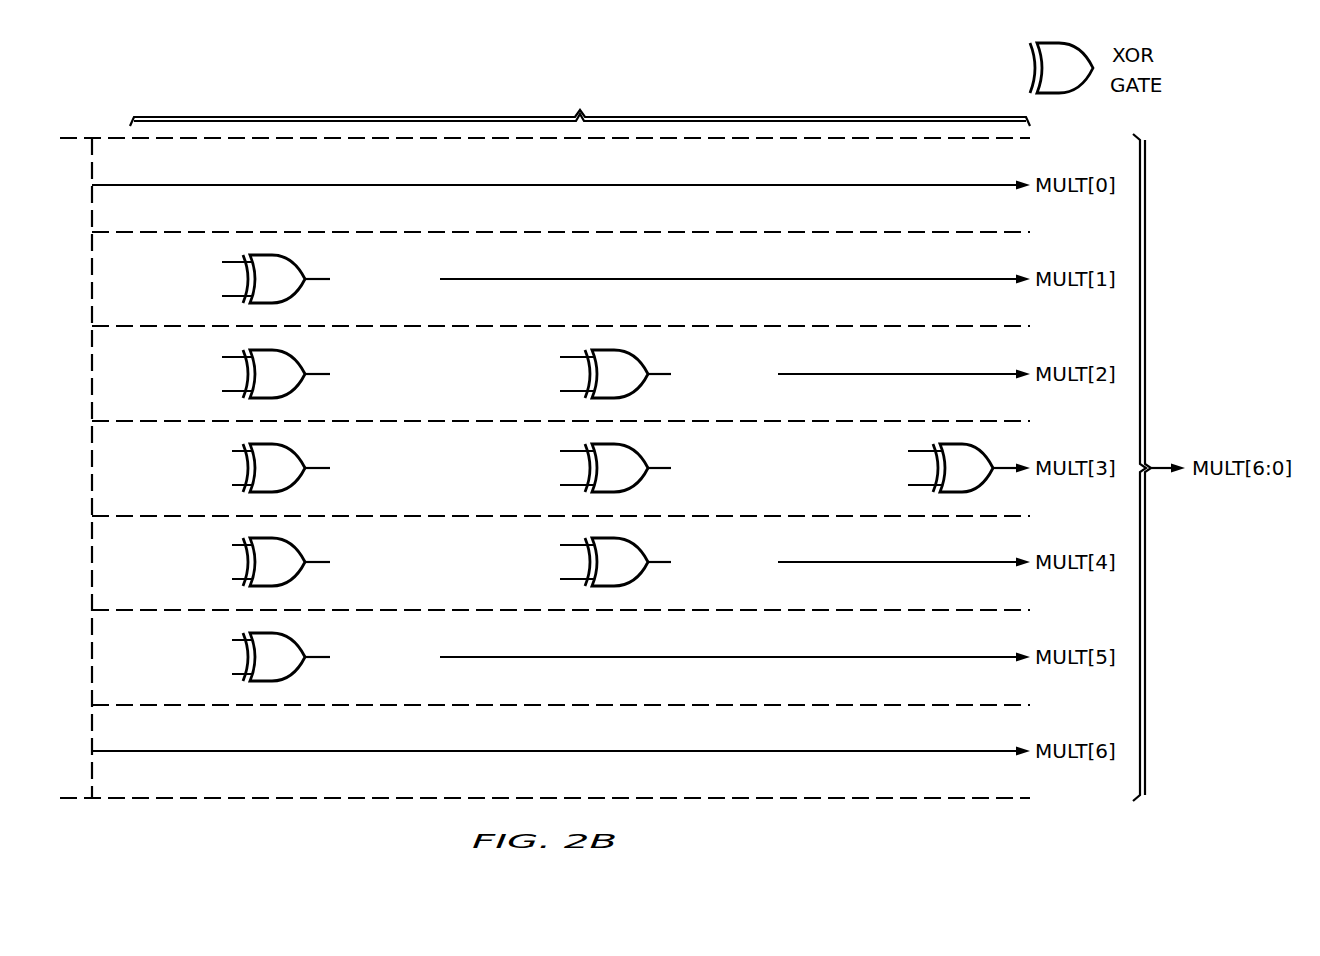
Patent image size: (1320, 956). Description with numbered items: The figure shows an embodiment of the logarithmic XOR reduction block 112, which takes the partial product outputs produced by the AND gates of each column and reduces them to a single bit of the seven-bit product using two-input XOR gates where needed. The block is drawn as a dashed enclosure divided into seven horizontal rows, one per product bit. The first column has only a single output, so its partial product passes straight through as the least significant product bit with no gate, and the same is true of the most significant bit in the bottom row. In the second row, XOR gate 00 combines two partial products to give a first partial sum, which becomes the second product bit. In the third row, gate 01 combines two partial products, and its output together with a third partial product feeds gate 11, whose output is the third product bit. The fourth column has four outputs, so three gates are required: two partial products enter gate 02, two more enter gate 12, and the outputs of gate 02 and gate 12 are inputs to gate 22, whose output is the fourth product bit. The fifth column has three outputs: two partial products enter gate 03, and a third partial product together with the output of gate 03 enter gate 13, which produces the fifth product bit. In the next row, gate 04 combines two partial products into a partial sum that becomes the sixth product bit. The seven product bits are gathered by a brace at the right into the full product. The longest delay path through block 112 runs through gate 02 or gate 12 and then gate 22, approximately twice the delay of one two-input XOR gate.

The logarithmic XOR reduction block 112 is at (545, 421).
The XOR00 00 is at (291, 279).
The XOR01 01 is at (291, 374).
The XOR02 02 is at (296, 468).
The XOR03 03 is at (296, 562).
The XOR04 04 is at (296, 657).
The XOR11 11 is at (614, 374).
The XOR12 12 is at (631, 468).
The XOR13 13 is at (614, 562).
The XOR22 22 is at (912, 468).